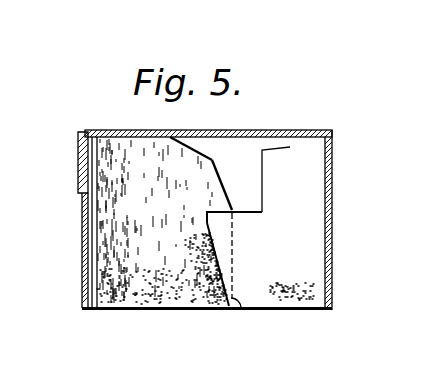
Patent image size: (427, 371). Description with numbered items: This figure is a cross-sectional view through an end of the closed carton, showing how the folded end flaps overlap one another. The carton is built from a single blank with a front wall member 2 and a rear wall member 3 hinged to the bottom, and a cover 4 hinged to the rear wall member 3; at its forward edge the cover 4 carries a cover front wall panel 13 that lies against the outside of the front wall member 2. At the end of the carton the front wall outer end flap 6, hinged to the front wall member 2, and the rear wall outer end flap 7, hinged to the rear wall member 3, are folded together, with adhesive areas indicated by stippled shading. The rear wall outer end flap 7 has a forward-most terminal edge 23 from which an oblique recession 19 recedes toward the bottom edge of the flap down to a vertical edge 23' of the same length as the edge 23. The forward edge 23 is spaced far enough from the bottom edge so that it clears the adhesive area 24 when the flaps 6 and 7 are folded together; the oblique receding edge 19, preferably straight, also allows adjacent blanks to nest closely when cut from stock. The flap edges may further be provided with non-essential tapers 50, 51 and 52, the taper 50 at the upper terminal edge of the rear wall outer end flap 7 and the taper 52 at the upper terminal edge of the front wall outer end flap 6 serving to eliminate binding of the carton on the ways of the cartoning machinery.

The cover 4 is at (121, 130).
The cover front wall panel 13 is at (77, 157).
The front wall member 2 is at (82, 230).
The rear wall member 3 is at (333, 213).
The front wall outer end flap 6 is at (134, 226).
The rear wall outer end flap 7 is at (298, 237).
The taper 52 is at (190, 147).
The taper 51 is at (218, 178).
The taper 50 is at (290, 148).
The forward-most terminal edge 23 is at (234, 225).
The oblique recession 19 is at (217, 262).
The adhesive area 24 is at (200, 260).
The vertical edge 23' is at (246, 280).